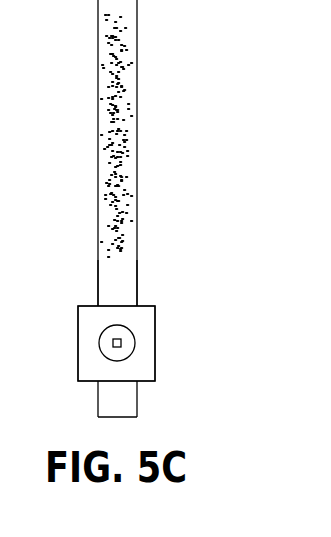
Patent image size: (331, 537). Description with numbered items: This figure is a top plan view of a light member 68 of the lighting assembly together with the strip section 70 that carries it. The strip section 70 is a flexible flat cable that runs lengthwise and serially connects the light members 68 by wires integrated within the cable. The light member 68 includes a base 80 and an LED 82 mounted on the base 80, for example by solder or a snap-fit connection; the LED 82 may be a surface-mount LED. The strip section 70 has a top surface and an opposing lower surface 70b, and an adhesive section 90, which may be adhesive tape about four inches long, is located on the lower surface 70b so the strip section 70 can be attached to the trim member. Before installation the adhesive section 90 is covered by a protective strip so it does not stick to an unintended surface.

The light member 68 is at (56, 337).
The strip section 70 is at (97, 103).
The lower surface 70b is at (117, 275).
The base 80 is at (142, 365).
The LED 82 is at (122, 343).
The adhesive section 90 is at (115, 83).